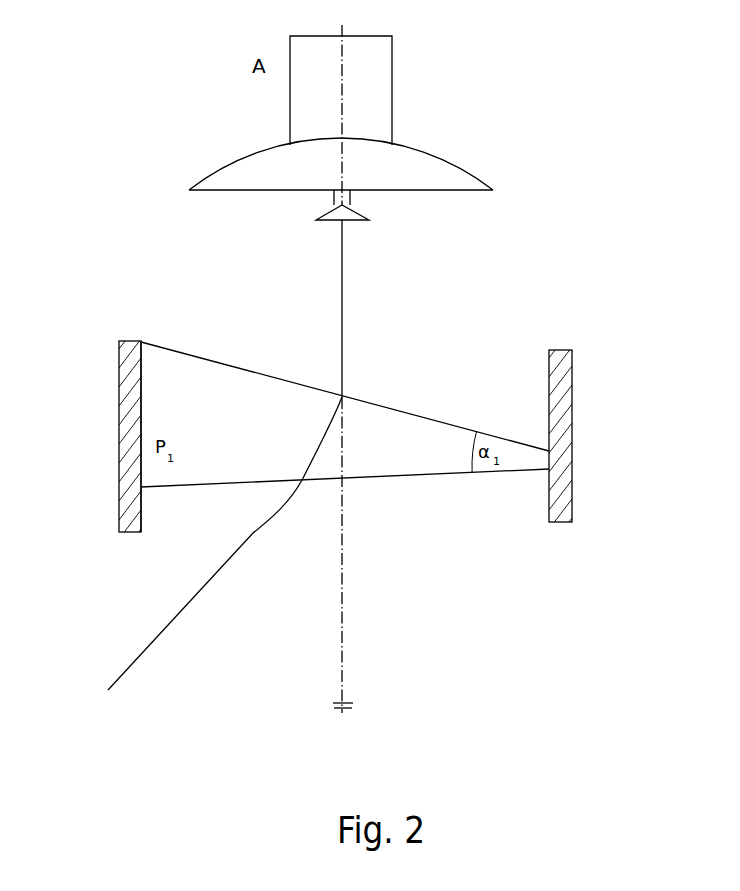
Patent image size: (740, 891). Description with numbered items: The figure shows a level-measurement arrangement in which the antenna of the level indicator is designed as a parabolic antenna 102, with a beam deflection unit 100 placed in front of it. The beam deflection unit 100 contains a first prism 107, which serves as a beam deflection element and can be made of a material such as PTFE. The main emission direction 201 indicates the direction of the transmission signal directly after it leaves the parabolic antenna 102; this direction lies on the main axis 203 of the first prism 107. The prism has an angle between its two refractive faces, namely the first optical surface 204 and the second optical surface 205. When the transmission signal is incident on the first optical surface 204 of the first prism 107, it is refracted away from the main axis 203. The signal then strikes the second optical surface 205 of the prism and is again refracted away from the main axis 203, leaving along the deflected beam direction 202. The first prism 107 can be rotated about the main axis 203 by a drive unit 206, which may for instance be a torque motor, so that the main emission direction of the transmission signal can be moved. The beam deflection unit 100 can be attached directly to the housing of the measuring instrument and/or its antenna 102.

The beam deflection unit 100 is at (586, 459).
The antenna 102 is at (247, 169).
The first prism 107 is at (155, 475).
The main emission direction 201 is at (342, 272).
The beam direction 202 is at (190, 603).
The main axis 203 is at (343, 630).
The first optical surface 204 is at (418, 412).
The second optical surface 205 is at (400, 476).
The drive unit 206 is at (120, 429).